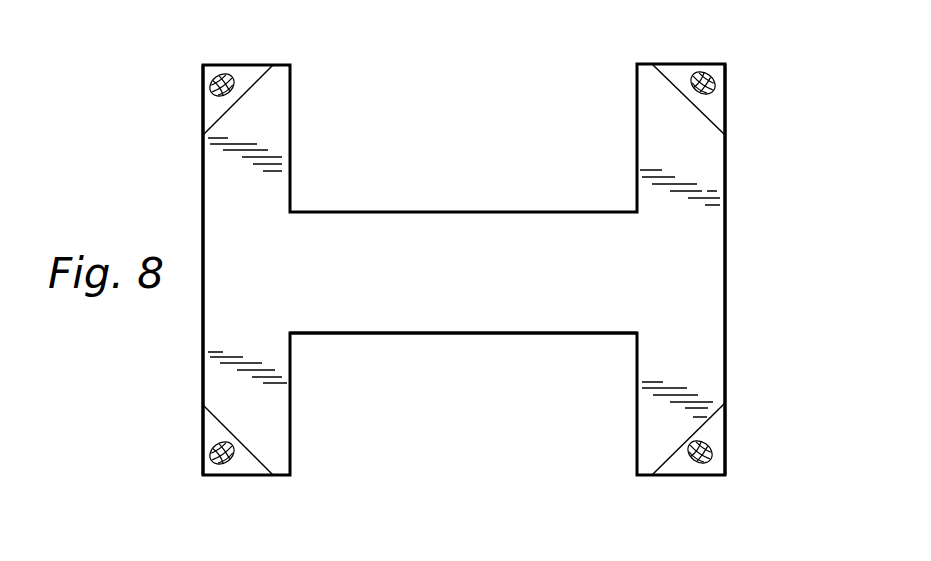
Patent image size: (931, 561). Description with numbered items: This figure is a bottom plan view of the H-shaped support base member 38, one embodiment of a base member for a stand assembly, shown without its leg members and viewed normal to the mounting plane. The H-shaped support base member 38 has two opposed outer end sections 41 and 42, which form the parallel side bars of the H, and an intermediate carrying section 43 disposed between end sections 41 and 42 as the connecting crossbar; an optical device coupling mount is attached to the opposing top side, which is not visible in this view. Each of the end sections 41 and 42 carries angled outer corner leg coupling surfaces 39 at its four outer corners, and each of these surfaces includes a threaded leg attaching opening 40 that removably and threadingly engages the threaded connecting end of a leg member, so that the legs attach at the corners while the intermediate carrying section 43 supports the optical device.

The H-shaped support base member 38 is at (477, 282).
The angled outer corner leg coupling surfaces 39 is at (717, 108).
The threaded leg attaching openings 40 is at (715, 80).
The outer end section 41 is at (215, 183).
The outer end section 42 is at (710, 258).
The intermediate carrying section 43 is at (402, 320).